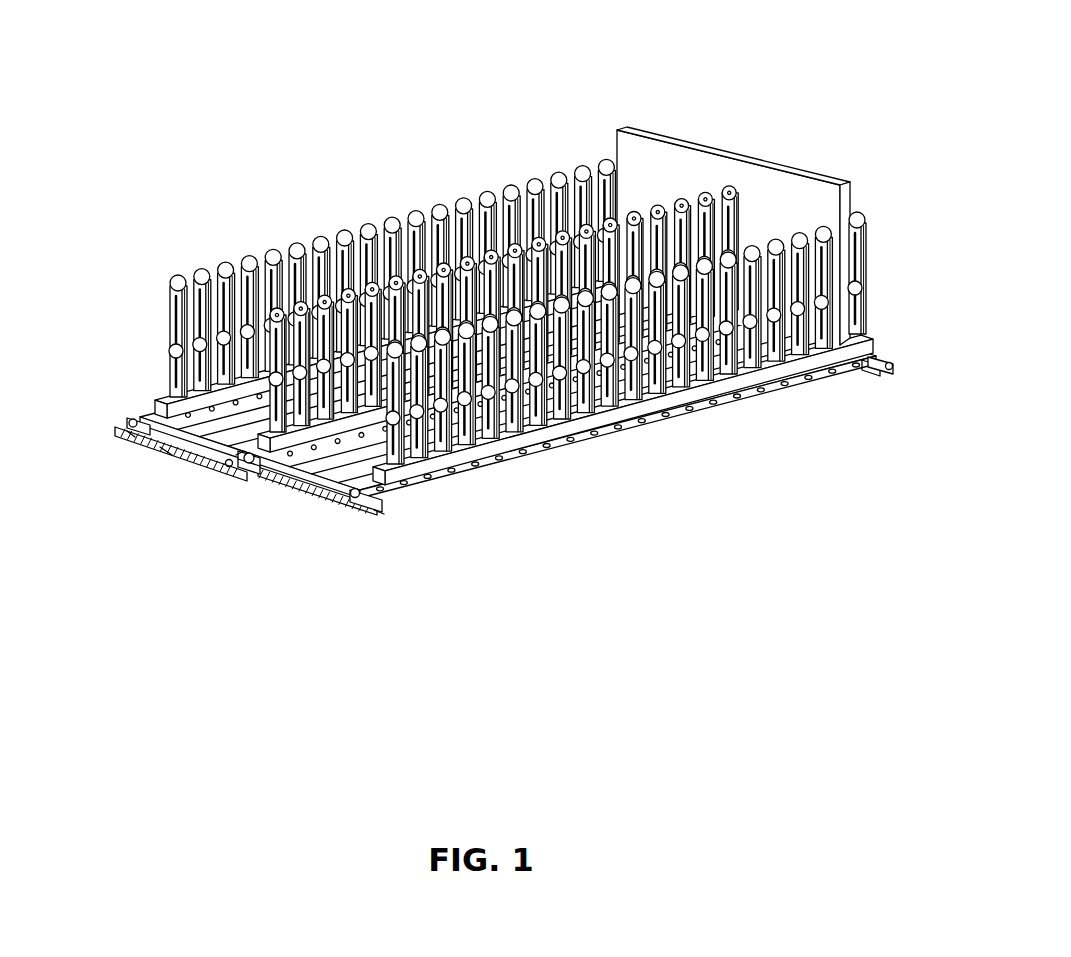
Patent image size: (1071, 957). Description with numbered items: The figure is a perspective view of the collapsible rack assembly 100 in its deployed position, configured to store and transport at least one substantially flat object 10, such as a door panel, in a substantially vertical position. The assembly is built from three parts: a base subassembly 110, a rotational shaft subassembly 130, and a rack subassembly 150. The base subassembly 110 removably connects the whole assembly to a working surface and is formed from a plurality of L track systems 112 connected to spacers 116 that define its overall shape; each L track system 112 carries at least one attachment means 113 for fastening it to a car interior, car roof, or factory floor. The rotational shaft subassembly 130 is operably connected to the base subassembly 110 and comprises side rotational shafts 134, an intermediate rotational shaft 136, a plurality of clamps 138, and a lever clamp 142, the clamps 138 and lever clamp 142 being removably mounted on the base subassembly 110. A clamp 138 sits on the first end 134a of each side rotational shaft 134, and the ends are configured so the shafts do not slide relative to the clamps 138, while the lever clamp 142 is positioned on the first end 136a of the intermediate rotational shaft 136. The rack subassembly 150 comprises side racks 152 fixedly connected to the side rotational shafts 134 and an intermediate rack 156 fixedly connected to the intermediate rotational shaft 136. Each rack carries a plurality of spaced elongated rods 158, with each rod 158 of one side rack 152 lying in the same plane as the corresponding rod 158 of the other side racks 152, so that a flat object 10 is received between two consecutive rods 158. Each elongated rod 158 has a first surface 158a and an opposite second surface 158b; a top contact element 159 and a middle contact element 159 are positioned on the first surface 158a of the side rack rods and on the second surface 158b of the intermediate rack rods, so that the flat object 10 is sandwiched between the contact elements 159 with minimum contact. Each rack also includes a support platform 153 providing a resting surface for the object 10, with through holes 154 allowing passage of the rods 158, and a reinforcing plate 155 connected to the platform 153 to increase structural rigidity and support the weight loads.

The collapsible rack assembly 100 is at (708, 106).
The substantially flat object 10 is at (790, 186).
The base subassembly 110 is at (192, 465).
The L track system 112 is at (320, 500).
The attachment means 113 is at (297, 487).
The spacer 116 is at (165, 452).
The rotational shaft subassembly 130 is at (491, 471).
The side rotational shaft 134 is at (140, 422).
The first end 134a is at (130, 433).
The intermediate rotational shaft 136 is at (243, 470).
The first end 136a is at (227, 465).
The clamp 138 is at (133, 427).
The lever clamp 142 is at (240, 458).
The rack subassembly 150 is at (473, 395).
The side rack 152 is at (633, 411).
The support platform 153 is at (521, 325).
The through hole 154 is at (834, 351).
The reinforcing plate 155 is at (563, 444).
The intermediate rack 156 is at (252, 462).
The elongated rod 158 is at (553, 285).
The first surface 158a is at (828, 266).
The second surface 158b is at (833, 288).
The contact element 159 is at (833, 232).